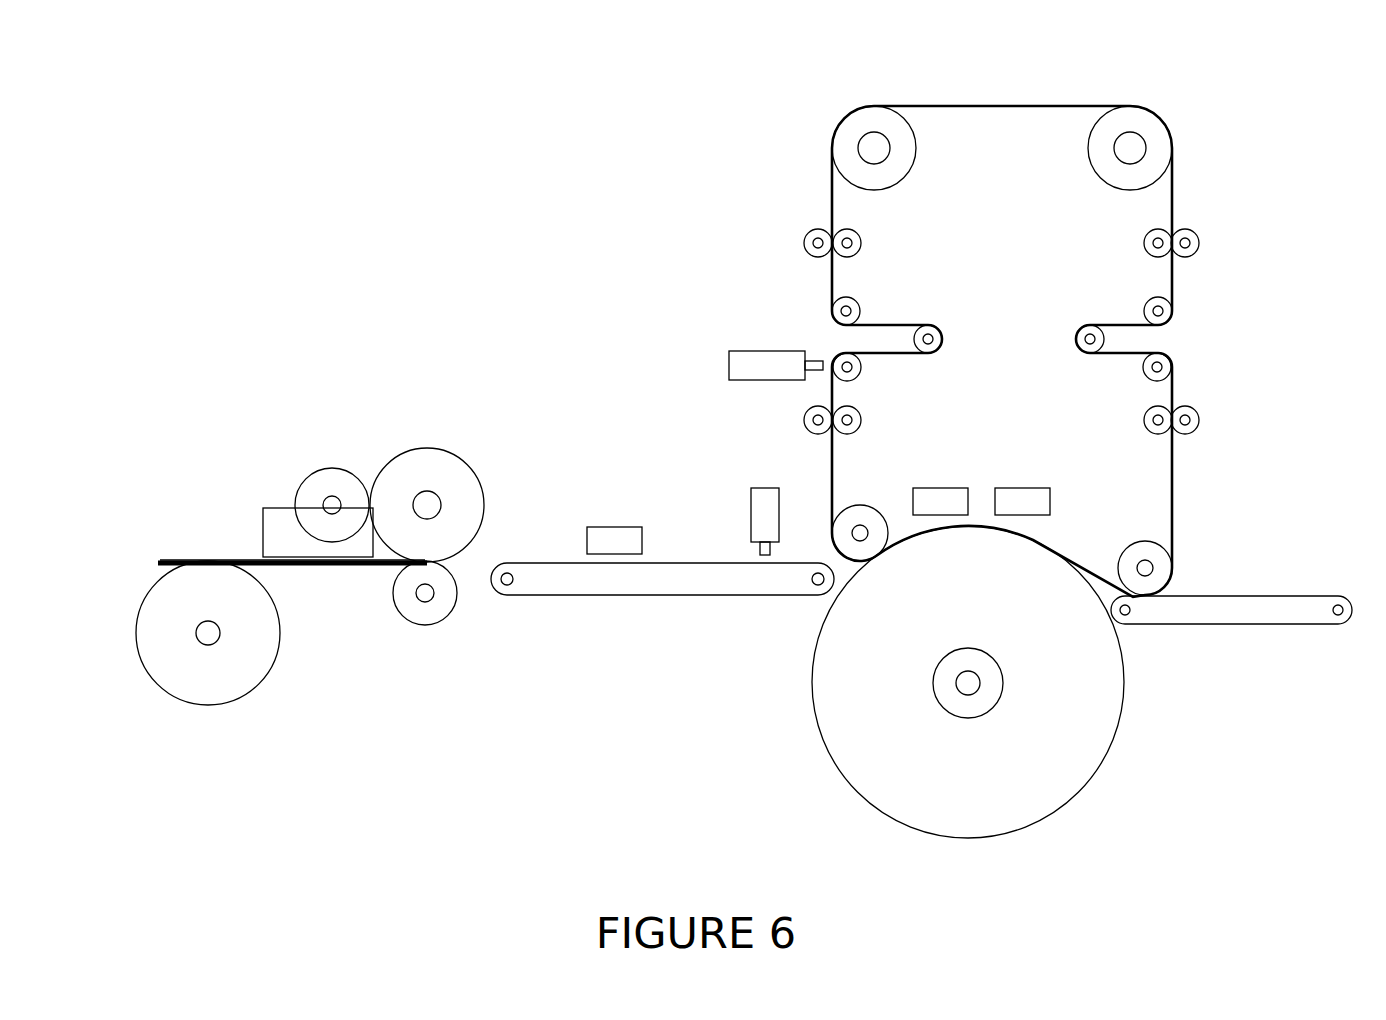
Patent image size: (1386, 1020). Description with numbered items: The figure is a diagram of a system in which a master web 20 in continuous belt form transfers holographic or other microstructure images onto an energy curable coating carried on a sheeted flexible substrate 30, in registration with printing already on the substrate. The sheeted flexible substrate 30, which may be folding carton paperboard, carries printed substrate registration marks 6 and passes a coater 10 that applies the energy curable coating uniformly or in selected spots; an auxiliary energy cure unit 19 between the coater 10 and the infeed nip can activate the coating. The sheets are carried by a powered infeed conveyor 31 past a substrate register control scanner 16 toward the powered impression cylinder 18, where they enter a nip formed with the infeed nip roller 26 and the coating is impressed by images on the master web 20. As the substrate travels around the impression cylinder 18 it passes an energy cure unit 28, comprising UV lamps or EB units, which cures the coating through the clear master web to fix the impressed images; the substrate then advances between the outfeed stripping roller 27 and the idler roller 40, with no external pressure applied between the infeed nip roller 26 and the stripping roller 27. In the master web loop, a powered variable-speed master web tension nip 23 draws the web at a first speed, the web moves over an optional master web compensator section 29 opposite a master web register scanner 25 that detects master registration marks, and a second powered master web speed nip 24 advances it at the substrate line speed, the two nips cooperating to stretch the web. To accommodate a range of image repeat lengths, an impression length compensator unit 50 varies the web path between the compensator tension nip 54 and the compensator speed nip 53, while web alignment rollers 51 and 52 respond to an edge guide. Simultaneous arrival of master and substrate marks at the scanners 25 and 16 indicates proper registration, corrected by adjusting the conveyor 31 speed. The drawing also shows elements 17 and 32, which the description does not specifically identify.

The substrate registration marks 6 is at (165, 560).
The coater 10 is at (352, 443).
The substrate register control scanner 16 is at (757, 523).
The roll 17 is at (427, 498).
The impression cylinder 18 is at (1095, 708).
The auxiliary energy cure unit 19 is at (615, 533).
The master web 20 is at (1175, 283).
The master web tension nip 23 is at (800, 238).
The master web speed nip 24 is at (792, 419).
The master web register scanner 25 is at (735, 355).
The infeed nip roller 26 is at (875, 520).
The outfeed stripping roller 27 is at (1148, 552).
The energy cure unit 28 is at (945, 495).
The master web compensator section 29 is at (898, 317).
The sheeted flexible substrate 30 is at (230, 560).
The powered infeed conveyor 31 is at (546, 545).
The conveyor 32 is at (1228, 586).
The idler roller 40 is at (257, 640).
The impression length compensator unit 50 is at (1094, 312).
The web alignment roller 51 is at (866, 118).
The web alignment roller 52 is at (1135, 118).
The compensator speed nip 53 is at (1210, 228).
The compensator tension nip 54 is at (1215, 406).